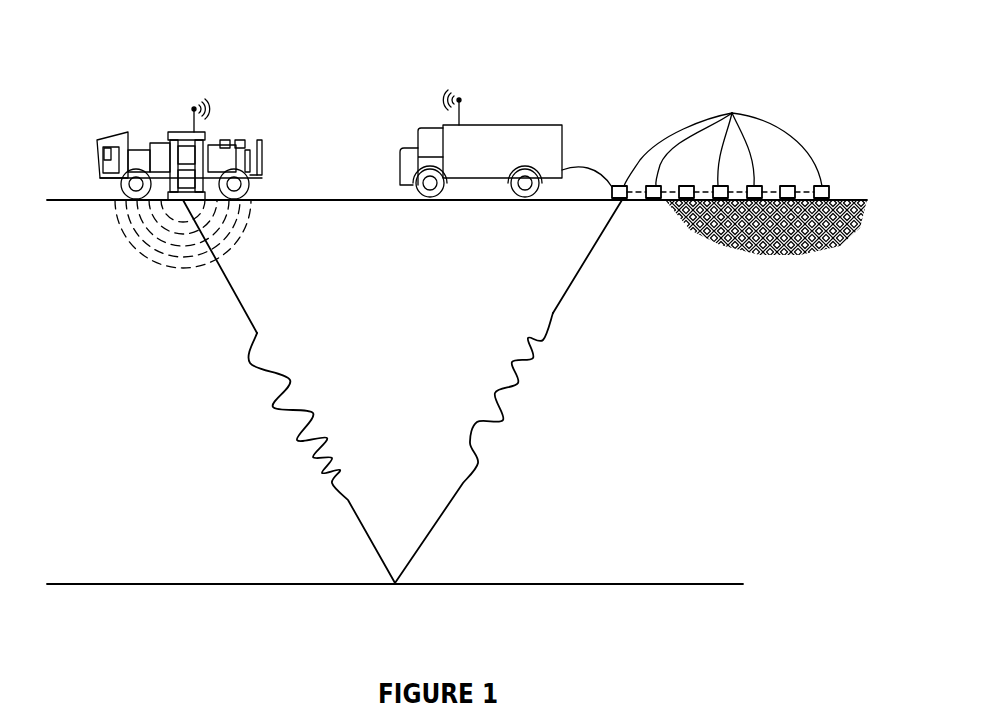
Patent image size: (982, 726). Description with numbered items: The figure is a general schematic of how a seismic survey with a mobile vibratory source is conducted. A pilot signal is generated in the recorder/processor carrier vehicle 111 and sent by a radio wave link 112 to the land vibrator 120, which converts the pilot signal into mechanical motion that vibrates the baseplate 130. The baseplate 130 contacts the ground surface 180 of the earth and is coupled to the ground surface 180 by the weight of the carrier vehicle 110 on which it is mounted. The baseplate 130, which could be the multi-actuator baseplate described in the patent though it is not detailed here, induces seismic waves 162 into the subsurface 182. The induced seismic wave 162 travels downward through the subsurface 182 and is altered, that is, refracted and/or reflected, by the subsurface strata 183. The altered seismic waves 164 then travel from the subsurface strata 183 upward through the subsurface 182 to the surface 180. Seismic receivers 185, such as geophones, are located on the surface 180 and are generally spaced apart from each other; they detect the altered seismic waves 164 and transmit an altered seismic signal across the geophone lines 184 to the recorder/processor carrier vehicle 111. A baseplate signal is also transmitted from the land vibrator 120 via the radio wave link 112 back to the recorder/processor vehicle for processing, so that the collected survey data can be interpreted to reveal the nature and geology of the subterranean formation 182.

The carrier vehicle 110 is at (107, 138).
The land vibrator 120 is at (168, 92).
The baseplate 130 is at (143, 250).
The recorder/processor carrier vehicle 111 is at (528, 122).
The radio wave link 112 is at (447, 90).
The seismic waves 162 is at (250, 317).
The altered seismic waves 164 is at (572, 282).
The ground surface 180 is at (71, 200).
The subsurface 182 is at (157, 476).
The subsurface strata 183 is at (640, 584).
The geophone lines 184 is at (592, 168).
The seismic receivers 185 is at (720, 139).